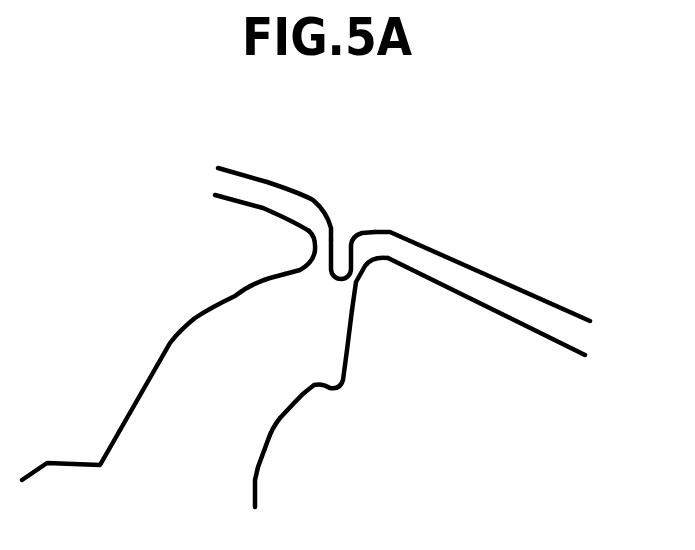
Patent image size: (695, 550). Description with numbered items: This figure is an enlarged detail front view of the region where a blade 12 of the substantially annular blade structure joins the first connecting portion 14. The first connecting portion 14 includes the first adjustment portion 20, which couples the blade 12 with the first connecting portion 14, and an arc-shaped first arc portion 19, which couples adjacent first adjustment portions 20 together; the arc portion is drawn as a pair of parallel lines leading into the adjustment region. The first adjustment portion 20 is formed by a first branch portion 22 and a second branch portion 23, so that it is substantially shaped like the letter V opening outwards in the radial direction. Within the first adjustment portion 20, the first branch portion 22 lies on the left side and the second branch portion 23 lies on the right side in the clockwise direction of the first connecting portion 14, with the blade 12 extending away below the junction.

The blade 12 is at (242, 440).
The first connecting portion 14 is at (538, 292).
The first arc portion 19 is at (275, 195).
The first adjustment portion 20 is at (353, 224).
The first branch portion 22 is at (323, 240).
The second branch portion 23 is at (362, 265).